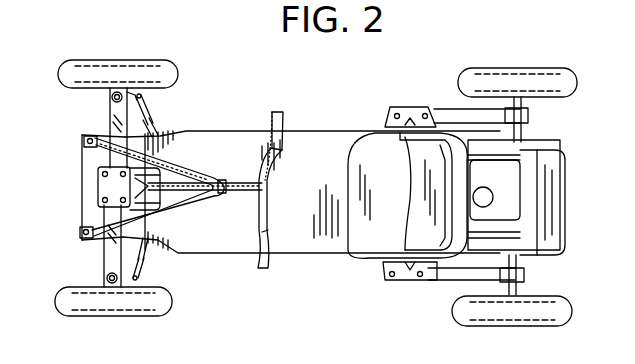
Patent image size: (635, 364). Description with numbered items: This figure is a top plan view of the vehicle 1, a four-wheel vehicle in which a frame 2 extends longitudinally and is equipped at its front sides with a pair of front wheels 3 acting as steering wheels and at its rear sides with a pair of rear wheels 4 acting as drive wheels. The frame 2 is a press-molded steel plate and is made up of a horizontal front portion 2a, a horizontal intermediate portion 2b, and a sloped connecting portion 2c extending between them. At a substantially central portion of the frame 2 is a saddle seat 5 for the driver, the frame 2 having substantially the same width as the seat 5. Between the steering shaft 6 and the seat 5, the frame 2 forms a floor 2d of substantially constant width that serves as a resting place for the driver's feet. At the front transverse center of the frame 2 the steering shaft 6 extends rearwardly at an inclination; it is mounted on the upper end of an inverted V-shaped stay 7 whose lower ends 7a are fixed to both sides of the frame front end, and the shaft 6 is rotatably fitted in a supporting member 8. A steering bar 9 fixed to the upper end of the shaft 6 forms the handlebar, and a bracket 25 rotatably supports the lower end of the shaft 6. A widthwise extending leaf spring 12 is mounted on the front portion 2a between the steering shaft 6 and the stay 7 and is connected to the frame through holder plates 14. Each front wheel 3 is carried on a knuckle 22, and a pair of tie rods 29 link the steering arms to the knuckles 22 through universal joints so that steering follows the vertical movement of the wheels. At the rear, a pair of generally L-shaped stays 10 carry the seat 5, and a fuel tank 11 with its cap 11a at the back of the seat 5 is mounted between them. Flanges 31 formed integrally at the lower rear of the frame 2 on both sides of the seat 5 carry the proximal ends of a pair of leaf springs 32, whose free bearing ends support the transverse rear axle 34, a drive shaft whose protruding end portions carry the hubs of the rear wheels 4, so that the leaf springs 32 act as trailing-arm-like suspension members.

The vehicle 1 is at (231, 98).
The frame 2 is at (316, 218).
The horizontal front portion 2a is at (92, 197).
The horizontal intermediate portion 2b is at (248, 254).
The sloped connecting portion 2c is at (170, 245).
The floor 2d is at (322, 150).
The front wheels 3 is at (153, 70).
The rear wheels 4 is at (565, 82).
The saddle seat 5 is at (376, 245).
The steering shaft 6 is at (260, 178).
The inverted V-shaped stay 7 is at (180, 172).
The lower ends of stay 7a is at (90, 137).
The supporting member 8 is at (222, 195).
The steering bar 9 is at (265, 208).
The L-shaped stays 10 is at (492, 155).
The fuel tank 11 is at (500, 187).
The cap 11a is at (490, 204).
The leaf spring 12 is at (115, 115).
The holder plates 14 is at (98, 178).
The knuckle 22 is at (132, 94).
The bracket 25 is at (84, 232).
The tie rods 29 is at (152, 122).
The flanges 31 is at (413, 107).
The leaf springs 32 is at (512, 115).
The rear axle 34 is at (520, 258).